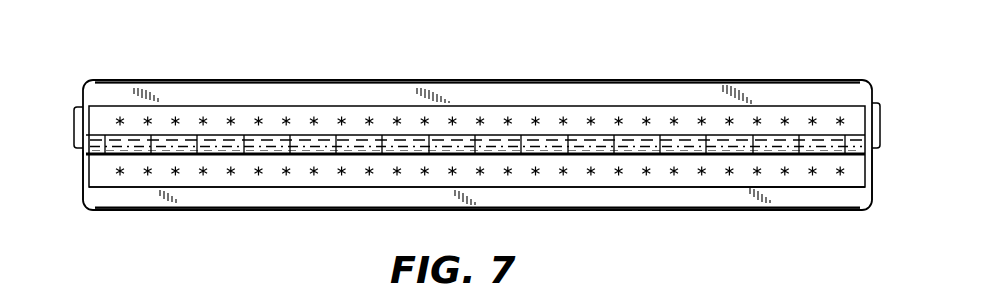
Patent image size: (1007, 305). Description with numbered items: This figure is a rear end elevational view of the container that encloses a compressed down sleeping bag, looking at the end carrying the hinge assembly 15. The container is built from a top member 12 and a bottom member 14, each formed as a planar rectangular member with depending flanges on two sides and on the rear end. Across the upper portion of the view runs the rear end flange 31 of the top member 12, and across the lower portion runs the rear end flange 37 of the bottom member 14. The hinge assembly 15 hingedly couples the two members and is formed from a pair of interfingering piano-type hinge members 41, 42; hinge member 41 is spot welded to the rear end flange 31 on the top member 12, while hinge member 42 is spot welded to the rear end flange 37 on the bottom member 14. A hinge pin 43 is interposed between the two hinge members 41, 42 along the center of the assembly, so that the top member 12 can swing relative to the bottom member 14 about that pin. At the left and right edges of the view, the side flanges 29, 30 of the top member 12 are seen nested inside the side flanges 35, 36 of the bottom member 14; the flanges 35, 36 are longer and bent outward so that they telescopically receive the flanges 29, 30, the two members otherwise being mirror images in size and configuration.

The top member 12 is at (548, 80).
The bottom member 14 is at (623, 211).
The hinge assembly 15 is at (817, 187).
The side flange 29 is at (82, 96).
The side flange 30 is at (872, 92).
The rear end flange 31 is at (357, 93).
The side flange 35 is at (82, 177).
The side flange 36 is at (874, 172).
The rear end flange 37 is at (333, 198).
The hinge member 41 is at (670, 105).
The hinge member 42 is at (712, 188).
The hinge pin 43 is at (498, 136).